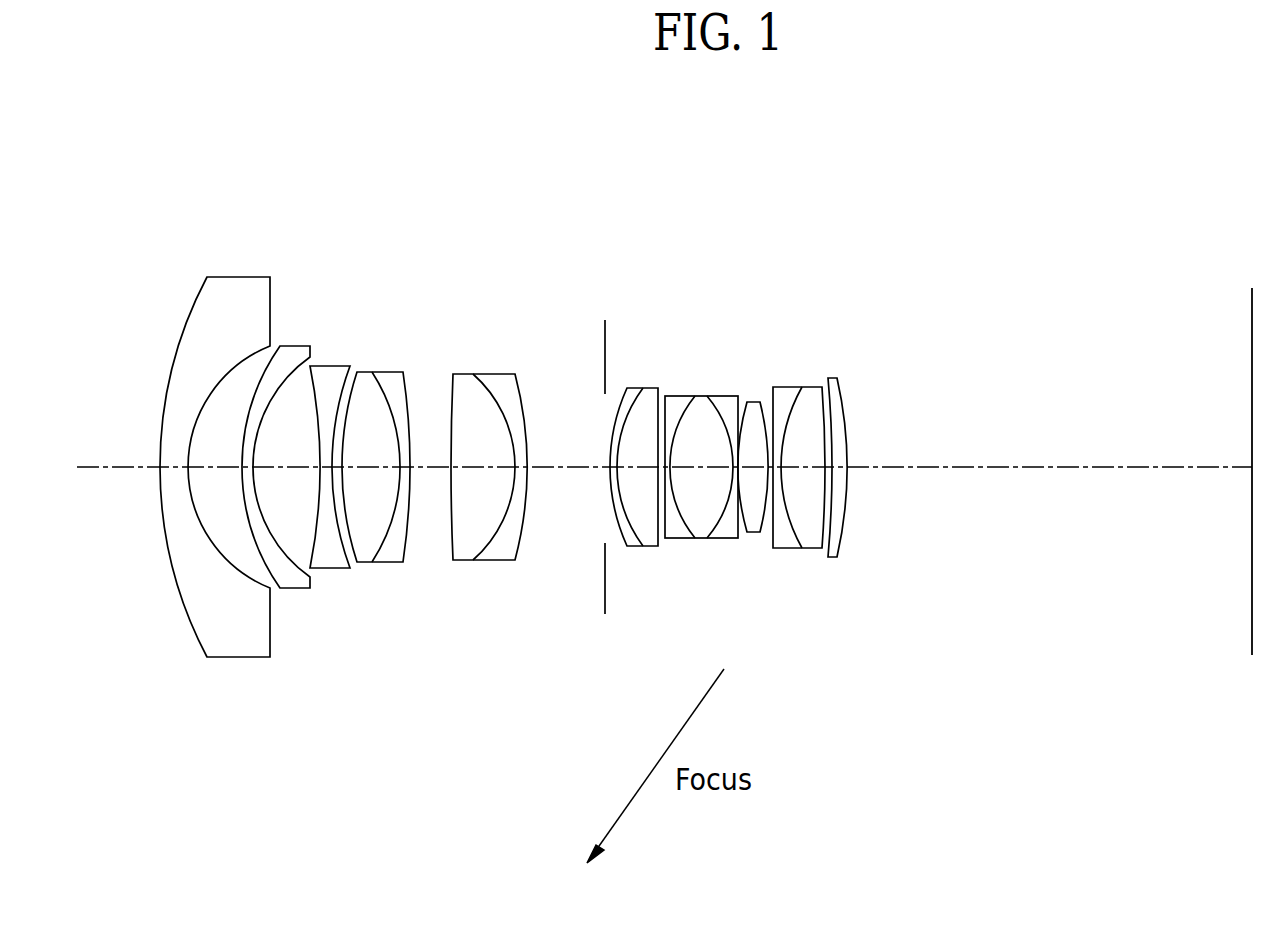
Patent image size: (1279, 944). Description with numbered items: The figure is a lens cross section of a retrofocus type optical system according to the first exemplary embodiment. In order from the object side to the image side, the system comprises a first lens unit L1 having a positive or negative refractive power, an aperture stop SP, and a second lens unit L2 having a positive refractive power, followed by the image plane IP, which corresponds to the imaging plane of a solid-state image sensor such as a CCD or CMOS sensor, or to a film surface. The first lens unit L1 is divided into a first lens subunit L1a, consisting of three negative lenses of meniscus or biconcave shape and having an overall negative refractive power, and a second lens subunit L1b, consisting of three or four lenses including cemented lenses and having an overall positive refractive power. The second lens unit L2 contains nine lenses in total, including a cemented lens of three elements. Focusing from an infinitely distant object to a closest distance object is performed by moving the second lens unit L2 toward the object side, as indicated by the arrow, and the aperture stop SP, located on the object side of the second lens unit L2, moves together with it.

The first lens unit L1 is at (343, 394).
The first lens subunit L1a is at (258, 428).
The second lens subunit L1b is at (434, 427).
The second lens unit L2 is at (724, 344).
The aperture stop SP is at (609, 447).
The image plane IP is at (1257, 452).